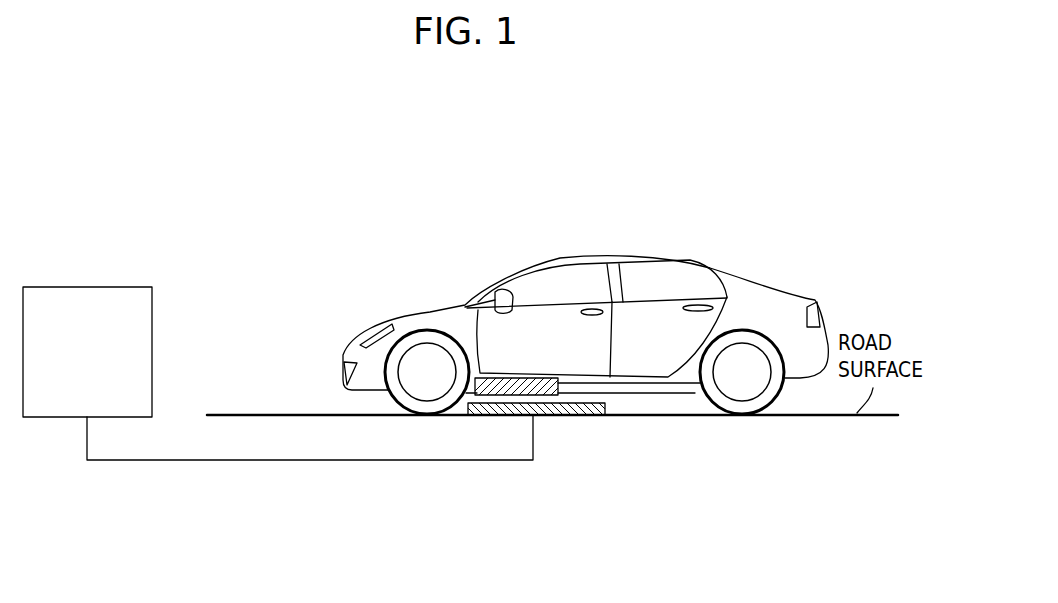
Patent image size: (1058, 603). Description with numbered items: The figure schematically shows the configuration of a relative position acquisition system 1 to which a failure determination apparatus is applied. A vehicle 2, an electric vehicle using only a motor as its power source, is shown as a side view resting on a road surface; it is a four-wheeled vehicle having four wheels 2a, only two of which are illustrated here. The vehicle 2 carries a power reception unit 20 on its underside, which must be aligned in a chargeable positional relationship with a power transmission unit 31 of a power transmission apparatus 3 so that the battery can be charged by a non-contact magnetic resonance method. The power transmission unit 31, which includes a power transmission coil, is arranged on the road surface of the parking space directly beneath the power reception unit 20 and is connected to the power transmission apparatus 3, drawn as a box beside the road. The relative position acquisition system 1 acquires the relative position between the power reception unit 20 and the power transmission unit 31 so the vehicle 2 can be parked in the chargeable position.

The relative position acquisition system 1 is at (540, 150).
The vehicle 2 is at (668, 252).
The wheel 2a is at (430, 335).
The power transmission apparatus 3 is at (83, 270).
The power reception unit 20 is at (511, 376).
The power transmission unit 31 is at (565, 415).